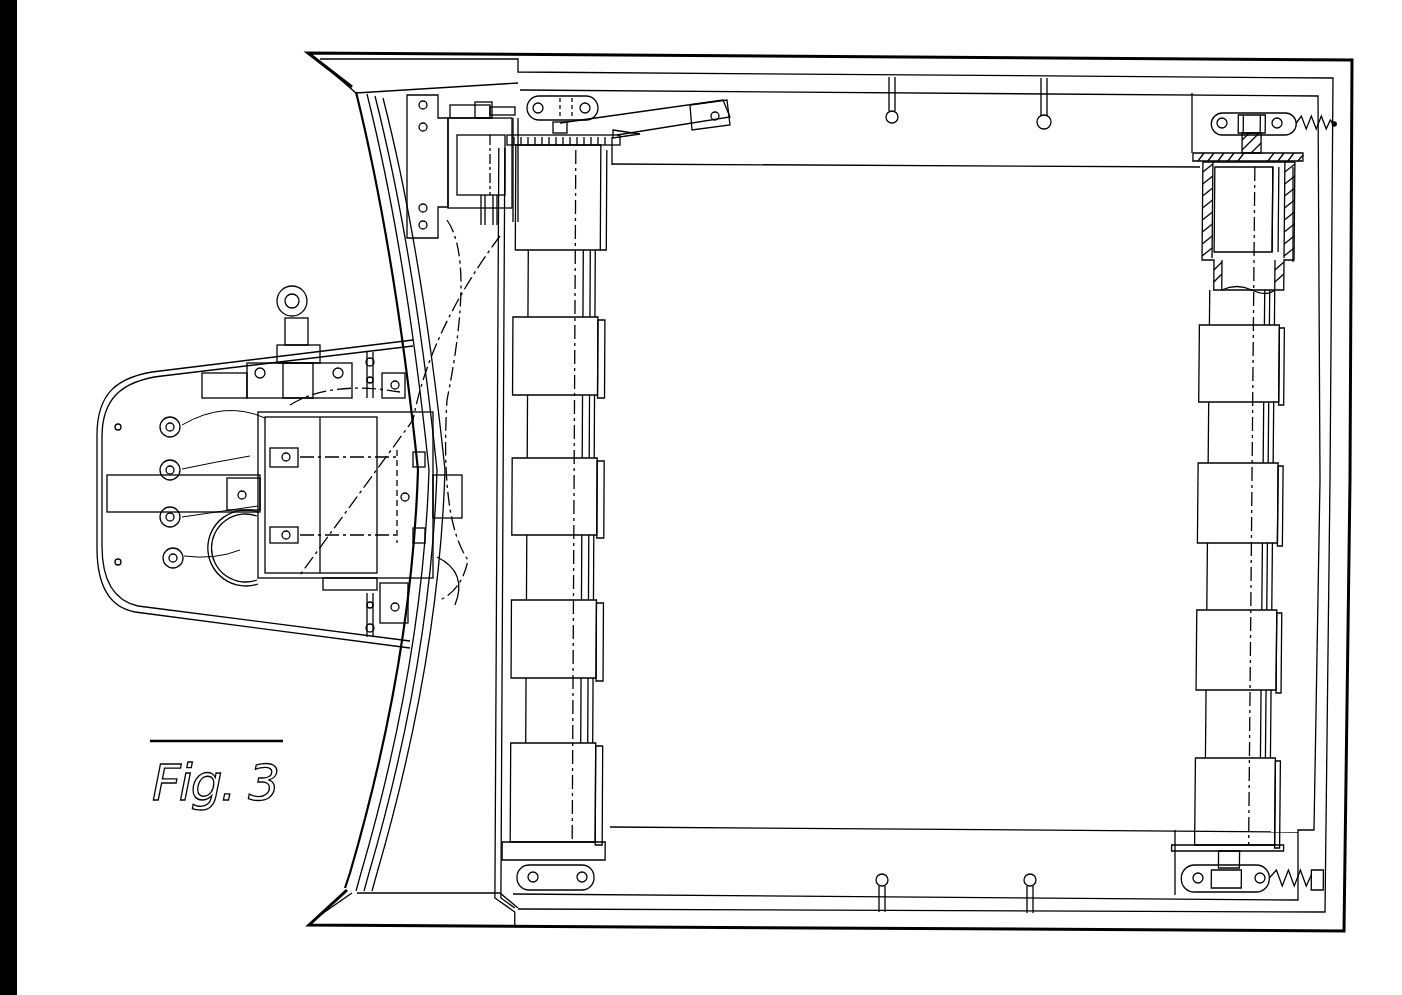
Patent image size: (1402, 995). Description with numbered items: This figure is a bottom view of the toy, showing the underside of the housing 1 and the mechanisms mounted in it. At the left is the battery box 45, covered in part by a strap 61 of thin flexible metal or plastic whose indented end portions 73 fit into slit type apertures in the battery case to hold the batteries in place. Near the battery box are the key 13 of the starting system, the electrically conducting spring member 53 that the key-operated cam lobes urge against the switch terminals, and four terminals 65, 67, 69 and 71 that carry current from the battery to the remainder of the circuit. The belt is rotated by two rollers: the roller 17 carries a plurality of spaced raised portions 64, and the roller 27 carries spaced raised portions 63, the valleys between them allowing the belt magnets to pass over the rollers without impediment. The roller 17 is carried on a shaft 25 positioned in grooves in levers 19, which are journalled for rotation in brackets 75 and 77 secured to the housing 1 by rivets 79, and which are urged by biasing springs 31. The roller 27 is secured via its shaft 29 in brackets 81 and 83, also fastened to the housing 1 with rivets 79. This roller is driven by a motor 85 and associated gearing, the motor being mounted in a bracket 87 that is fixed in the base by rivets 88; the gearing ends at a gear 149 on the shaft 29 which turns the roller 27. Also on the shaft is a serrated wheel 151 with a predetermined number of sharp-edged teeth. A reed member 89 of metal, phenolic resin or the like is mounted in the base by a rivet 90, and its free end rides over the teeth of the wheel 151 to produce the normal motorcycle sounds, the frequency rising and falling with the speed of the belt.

The housing 1 is at (1342, 430).
The key 13 is at (300, 298).
The roller 17 is at (1207, 558).
The levers 19 is at (1238, 890).
The shaft 25 is at (1245, 150).
The roller 27 is at (585, 712).
The shaft 29 is at (568, 128).
The biasing springs 31 is at (1300, 121).
The battery box 45 is at (457, 593).
The spring member 53 is at (235, 372).
The strap 61 is at (340, 548).
The raised portions 63 is at (604, 638).
The raised portions 64 is at (1207, 633).
The terminal 65 is at (163, 418).
The terminal 67 is at (160, 470).
The terminal 69 is at (160, 518).
The terminal 71 is at (164, 564).
The indented end portions 73 is at (363, 395).
The bracket 75 is at (1246, 114).
The bracket 77 is at (1222, 890).
The rivets 79 is at (539, 104).
The bracket 81 is at (586, 104).
The bracket 83 is at (600, 877).
The motor 85 is at (470, 168).
The bracket 87 is at (398, 130).
The rivets 88 is at (425, 101).
The reed member 89 is at (667, 79).
The rivet 90 is at (728, 117).
The gear 149 is at (645, 137).
The serrated wheel 151 is at (615, 158).